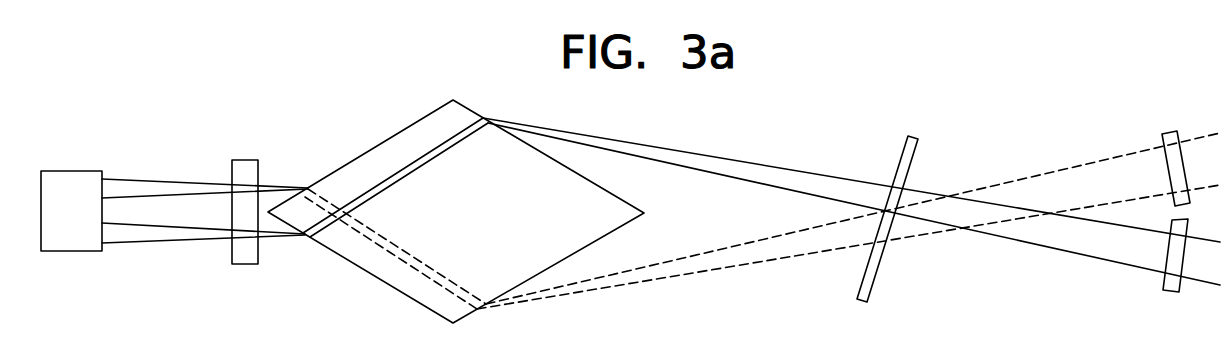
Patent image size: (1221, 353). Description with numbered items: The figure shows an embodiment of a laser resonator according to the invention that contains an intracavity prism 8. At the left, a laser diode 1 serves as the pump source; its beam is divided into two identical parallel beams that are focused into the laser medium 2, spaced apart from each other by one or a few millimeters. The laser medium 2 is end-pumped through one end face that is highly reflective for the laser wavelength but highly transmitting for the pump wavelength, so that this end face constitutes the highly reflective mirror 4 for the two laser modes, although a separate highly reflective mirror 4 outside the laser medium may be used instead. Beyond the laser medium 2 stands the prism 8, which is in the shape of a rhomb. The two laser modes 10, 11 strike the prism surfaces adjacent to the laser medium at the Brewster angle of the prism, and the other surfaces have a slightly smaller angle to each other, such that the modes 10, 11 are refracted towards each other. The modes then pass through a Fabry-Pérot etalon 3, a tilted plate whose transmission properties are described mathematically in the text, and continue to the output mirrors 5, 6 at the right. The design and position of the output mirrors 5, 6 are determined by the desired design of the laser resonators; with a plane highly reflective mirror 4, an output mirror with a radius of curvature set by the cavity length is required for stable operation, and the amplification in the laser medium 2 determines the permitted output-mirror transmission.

The laser diode 1 is at (70, 171).
The laser medium 2 is at (246, 160).
The Fabry-Pérot etalon 3 is at (903, 152).
The highly reflective mirror 4 is at (232, 171).
The output mirror 5 is at (1177, 140).
The output mirror 6 is at (1177, 287).
The intracavity prism 8 is at (427, 123).
The laser mode 10 is at (783, 172).
The laser mode 11 is at (783, 257).